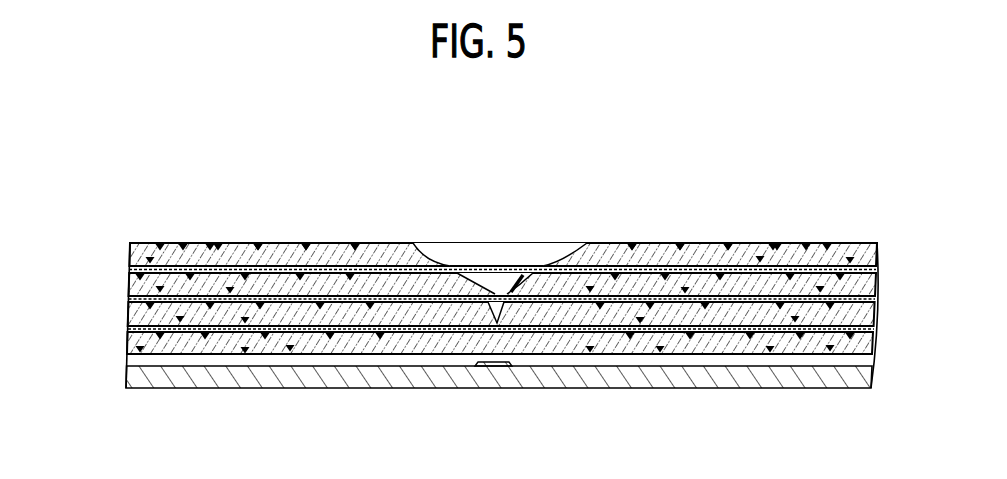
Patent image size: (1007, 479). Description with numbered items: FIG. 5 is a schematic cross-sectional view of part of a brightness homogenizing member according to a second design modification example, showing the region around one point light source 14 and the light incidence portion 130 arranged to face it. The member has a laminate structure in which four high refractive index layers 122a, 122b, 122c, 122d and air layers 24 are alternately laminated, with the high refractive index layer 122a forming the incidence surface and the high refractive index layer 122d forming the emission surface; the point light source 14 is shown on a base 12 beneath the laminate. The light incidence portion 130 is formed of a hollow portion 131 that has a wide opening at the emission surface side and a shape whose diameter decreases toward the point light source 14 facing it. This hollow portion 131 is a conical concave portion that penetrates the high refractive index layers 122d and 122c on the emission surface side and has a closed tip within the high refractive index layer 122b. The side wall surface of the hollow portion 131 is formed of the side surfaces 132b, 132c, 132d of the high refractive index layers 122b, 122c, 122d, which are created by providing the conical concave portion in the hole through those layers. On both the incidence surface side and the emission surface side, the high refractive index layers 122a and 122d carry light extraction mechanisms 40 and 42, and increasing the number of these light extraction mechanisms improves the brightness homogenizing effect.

The substrate 12 is at (127, 378).
The point light source 14 is at (513, 367).
The air layers 24 is at (853, 269).
The light extraction mechanism 40 is at (258, 243).
The light extraction mechanism 42 is at (218, 243).
The high refractive index layer 122a is at (127, 341).
The high refractive index layer 122b is at (128, 312).
The high refractive index layer 122c is at (128, 284).
The high refractive index layer 122d is at (129, 255).
The light incidence portion 130 is at (495, 230).
The hollow portion 131 is at (505, 245).
The side surface 132b is at (549, 245).
The side surface 132c is at (467, 248).
The side surface 132d is at (425, 244).